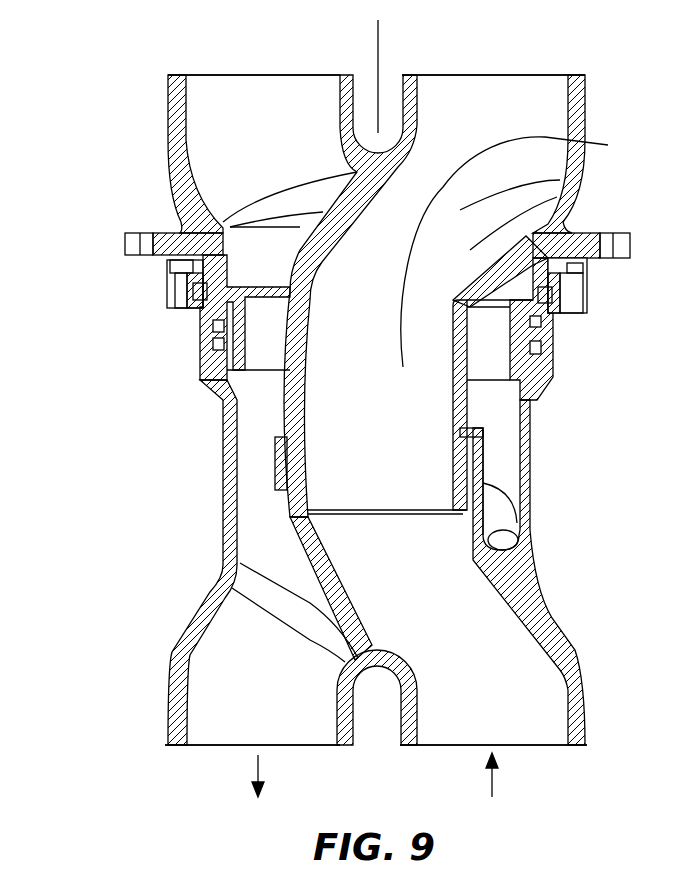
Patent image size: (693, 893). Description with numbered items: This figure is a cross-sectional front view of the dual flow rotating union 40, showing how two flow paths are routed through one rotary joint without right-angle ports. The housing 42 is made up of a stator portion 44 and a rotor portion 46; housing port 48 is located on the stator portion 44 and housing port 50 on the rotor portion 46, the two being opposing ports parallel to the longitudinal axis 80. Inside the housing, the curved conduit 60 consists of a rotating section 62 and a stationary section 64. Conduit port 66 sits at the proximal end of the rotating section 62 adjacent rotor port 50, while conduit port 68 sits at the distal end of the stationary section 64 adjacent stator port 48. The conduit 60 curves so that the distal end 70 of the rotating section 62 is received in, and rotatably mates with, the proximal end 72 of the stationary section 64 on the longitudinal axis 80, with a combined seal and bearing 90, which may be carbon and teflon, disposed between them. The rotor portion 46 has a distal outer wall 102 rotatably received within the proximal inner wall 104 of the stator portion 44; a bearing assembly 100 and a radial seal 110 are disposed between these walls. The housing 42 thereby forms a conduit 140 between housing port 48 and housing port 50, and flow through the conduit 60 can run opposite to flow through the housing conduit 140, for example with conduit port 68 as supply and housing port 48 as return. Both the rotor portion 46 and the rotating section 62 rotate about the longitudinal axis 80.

The dual flow rotating union 40 is at (123, 61).
The housing 42 is at (585, 100).
The stator portion 44 is at (223, 540).
The rotor portion 46 is at (193, 187).
The housing port 48 is at (225, 747).
The housing port 50 is at (255, 92).
The conduit 60 is at (557, 197).
The rotating section 62 is at (520, 250).
The stationary section 64 is at (527, 537).
The conduit port 66 is at (477, 88).
The conduit port 68 is at (537, 735).
The distal end of rotating section 70 is at (423, 460).
The proximal end of stationary section 72 is at (475, 440).
The longitudinal axis 80 is at (378, 45).
The combined seal and bearing 90 is at (523, 510).
The bearing assembly 100 is at (207, 378).
The distal outer wall 102 is at (232, 335).
The proximal inner wall 104 is at (213, 358).
The radial seal 110 is at (553, 343).
The housing conduit 140 is at (250, 510).